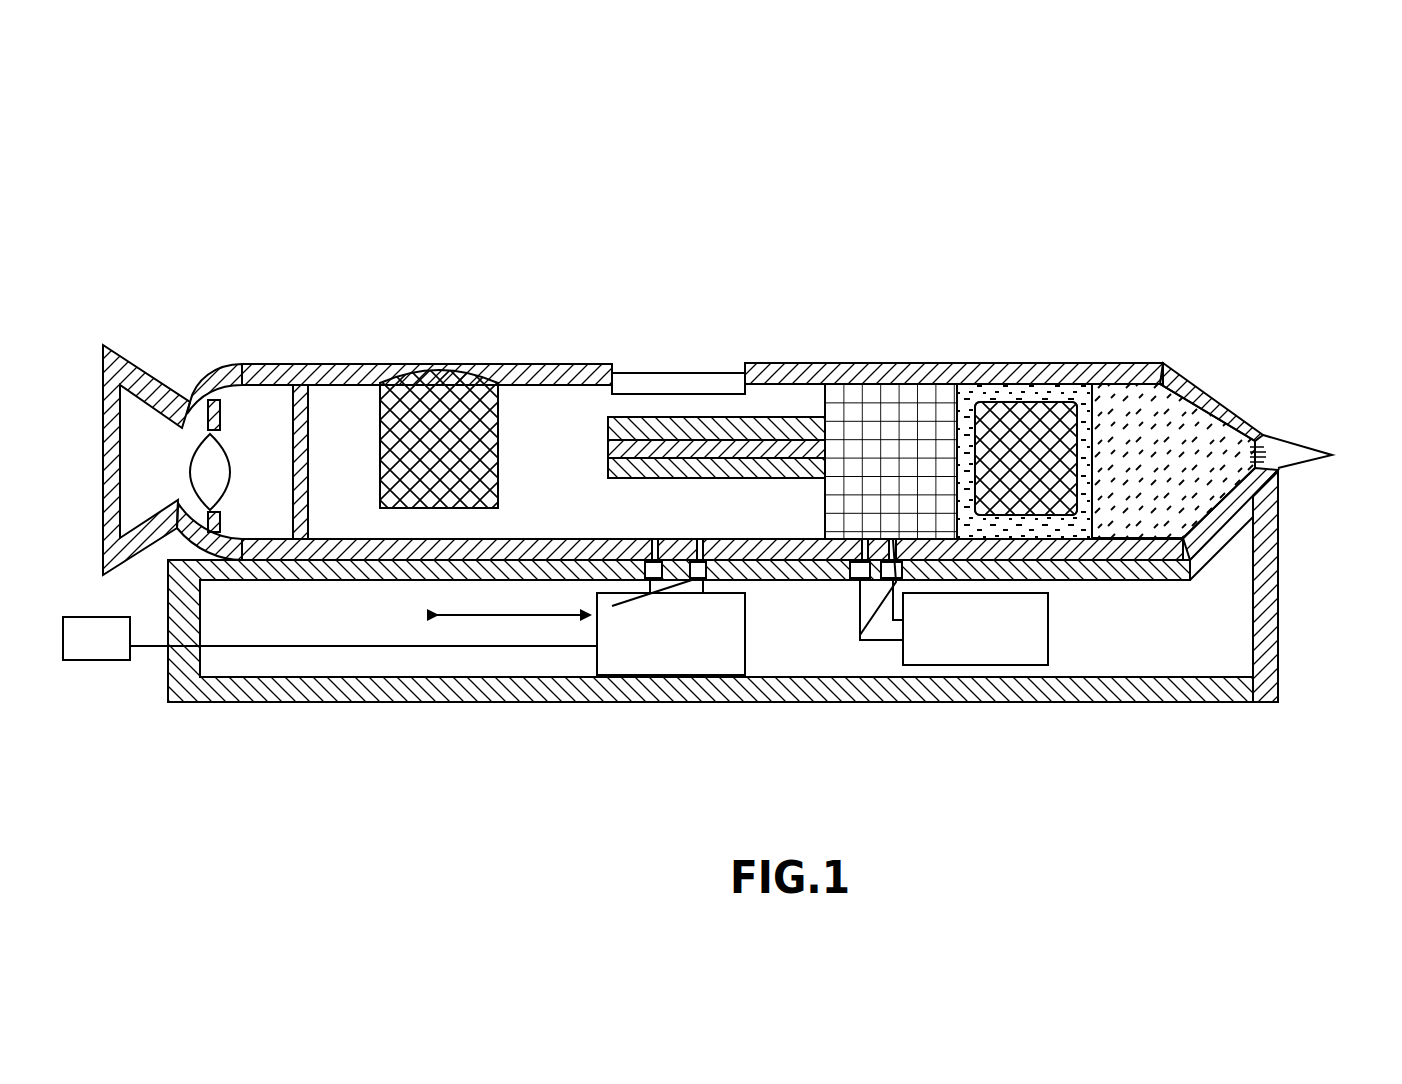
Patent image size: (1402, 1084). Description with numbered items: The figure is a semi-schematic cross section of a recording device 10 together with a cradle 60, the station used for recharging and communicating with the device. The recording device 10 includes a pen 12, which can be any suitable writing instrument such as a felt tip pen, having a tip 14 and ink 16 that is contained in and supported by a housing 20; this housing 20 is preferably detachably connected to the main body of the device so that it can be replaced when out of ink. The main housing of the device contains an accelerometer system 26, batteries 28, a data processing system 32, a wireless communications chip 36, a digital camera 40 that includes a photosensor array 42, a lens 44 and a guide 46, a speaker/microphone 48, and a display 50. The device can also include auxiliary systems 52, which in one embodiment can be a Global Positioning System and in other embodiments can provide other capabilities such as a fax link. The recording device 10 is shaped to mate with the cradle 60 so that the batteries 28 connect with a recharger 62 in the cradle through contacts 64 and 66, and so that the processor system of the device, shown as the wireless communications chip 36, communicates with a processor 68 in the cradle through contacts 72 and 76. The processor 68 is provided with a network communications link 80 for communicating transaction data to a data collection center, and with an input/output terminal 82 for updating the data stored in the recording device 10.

The recording device 10 is at (1117, 217).
The pen 12 is at (782, 397).
The tip 14 is at (1302, 437).
The ink 16 is at (1157, 420).
The housing 20 is at (1113, 360).
The accelerometer system 26 is at (1000, 410).
The batteries 28 is at (888, 388).
The data processing system 32 is at (716, 379).
The wireless communications chip 36 is at (658, 425).
The digital camera 40 is at (283, 378).
The photosensor array 42 is at (310, 427).
The lens 44 is at (200, 437).
The guide 46 is at (103, 345).
The speaker/microphone 48 is at (433, 370).
The display 50 is at (637, 373).
The auxiliary systems 52 is at (780, 580).
The cradle 60 is at (785, 627).
The recharger 62 is at (1050, 655).
The contacts 64 is at (866, 580).
The contacts 66 is at (893, 540).
The processor 68 is at (662, 657).
The contacts 72 is at (663, 567).
The contacts 76 is at (652, 545).
The network communications link 80 is at (510, 617).
The input/output terminal 82 is at (330, 638).